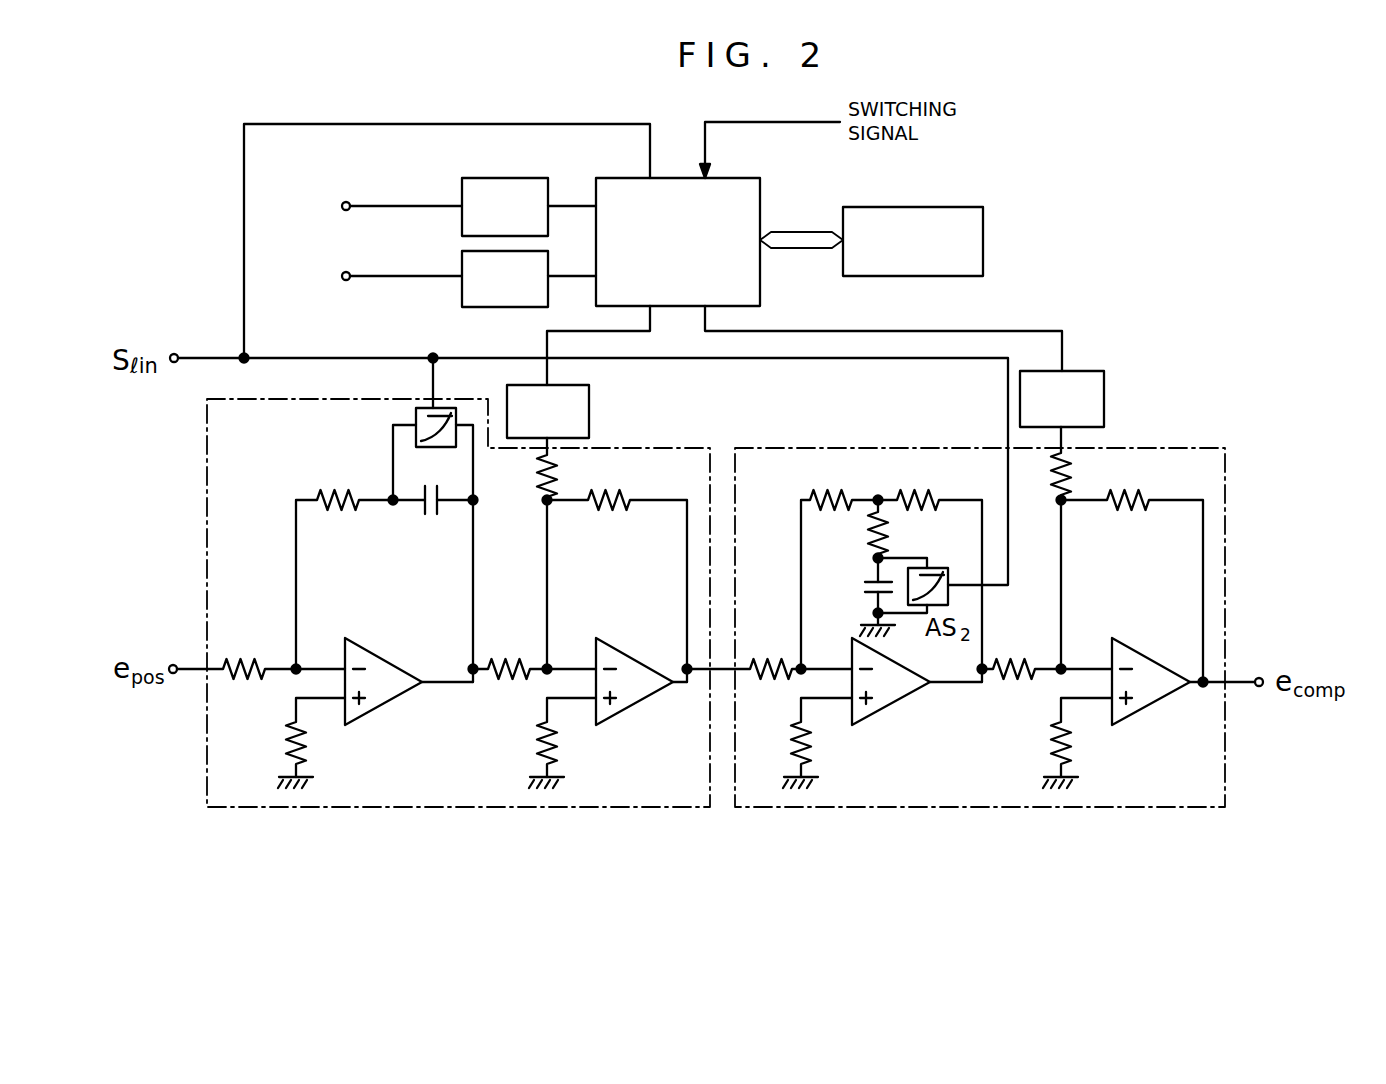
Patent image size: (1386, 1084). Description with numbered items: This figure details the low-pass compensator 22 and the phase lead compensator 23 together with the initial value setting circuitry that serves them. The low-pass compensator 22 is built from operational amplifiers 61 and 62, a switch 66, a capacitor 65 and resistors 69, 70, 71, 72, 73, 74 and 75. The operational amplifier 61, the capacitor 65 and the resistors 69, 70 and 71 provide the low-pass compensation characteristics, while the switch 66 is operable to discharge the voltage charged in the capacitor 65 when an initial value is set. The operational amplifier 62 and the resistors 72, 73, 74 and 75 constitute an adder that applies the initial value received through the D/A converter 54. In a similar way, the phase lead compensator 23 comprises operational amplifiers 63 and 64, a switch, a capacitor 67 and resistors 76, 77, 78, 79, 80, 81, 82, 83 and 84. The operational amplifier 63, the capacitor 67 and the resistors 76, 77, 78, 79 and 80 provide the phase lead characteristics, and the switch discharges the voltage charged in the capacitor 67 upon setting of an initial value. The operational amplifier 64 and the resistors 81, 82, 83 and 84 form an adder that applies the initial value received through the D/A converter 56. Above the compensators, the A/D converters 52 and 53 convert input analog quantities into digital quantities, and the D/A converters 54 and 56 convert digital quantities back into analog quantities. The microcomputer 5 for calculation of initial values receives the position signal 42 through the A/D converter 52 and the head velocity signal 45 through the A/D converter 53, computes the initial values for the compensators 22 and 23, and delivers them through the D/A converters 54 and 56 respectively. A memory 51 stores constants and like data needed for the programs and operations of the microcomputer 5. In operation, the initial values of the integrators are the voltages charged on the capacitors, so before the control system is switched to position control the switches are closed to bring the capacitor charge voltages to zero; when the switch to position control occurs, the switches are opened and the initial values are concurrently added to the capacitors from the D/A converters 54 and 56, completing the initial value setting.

The microcomputer 5 is at (598, 177).
The low-pass compensator 22 is at (348, 807).
The phase lead compensator 23 is at (855, 807).
The position signal 42 is at (383, 205).
The head velocity signal 45 is at (373, 275).
The memory 51 is at (984, 242).
The A/D converter 52 is at (498, 178).
The A/D converter 53 is at (462, 254).
The D/A converter 54 is at (590, 412).
The D/A converter 56 is at (1105, 400).
The operational amplifier 61 is at (388, 703).
The operational amplifier 62 is at (644, 703).
The operational amplifier 63 is at (904, 703).
The operational amplifier 64 is at (1164, 703).
The capacitor 65 is at (422, 516).
The switch 66 is at (415, 416).
The capacitor 67 is at (868, 580).
The resistor 69 is at (284, 742).
The resistor 70 is at (246, 657).
The resistor 71 is at (334, 512).
The resistor 72 is at (606, 511).
The resistor 73 is at (540, 473).
The resistor 74 is at (503, 657).
The resistor 75 is at (534, 742).
The resistor 76 is at (766, 657).
The resistor 77 is at (791, 742).
The resistor 78 is at (823, 488).
The resistor 79 is at (893, 534).
The resistor 80 is at (920, 488).
The resistor 81 is at (1007, 657).
The resistor 82 is at (1044, 742).
The resistor 83 is at (1072, 486).
The resistor 84 is at (1128, 512).